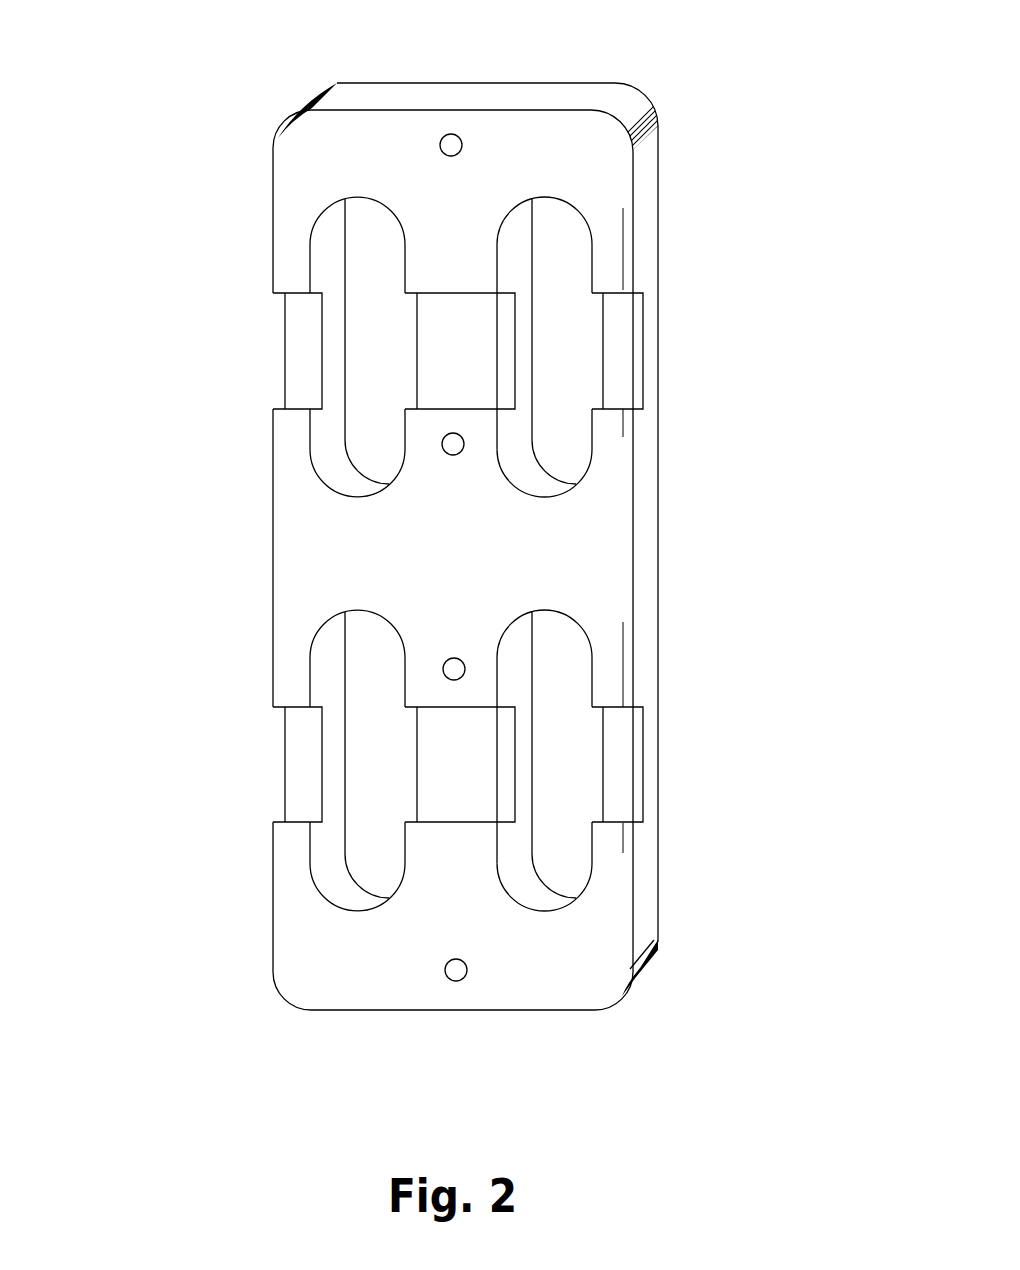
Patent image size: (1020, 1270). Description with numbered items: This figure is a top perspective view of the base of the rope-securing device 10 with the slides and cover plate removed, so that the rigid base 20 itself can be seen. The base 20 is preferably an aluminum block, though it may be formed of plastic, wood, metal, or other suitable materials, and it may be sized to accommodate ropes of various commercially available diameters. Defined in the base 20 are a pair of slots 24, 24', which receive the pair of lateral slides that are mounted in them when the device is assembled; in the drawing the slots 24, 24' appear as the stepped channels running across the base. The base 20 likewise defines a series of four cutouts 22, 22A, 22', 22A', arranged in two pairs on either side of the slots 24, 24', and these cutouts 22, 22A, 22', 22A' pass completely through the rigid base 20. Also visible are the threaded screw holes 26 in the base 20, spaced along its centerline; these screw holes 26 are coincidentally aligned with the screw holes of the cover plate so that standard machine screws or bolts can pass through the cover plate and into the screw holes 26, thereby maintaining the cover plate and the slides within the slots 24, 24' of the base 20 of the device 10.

The rope-securing device 10 is at (556, 137).
The rigid base 20 is at (316, 171).
The cutout 22 is at (235, 347).
The cutout 22A is at (689, 347).
The cutout 22' is at (231, 760).
The cutout 22A' is at (689, 760).
The slot 24 is at (475, 351).
The slot 24' is at (480, 764).
The threaded screw hole 26 is at (451, 134).